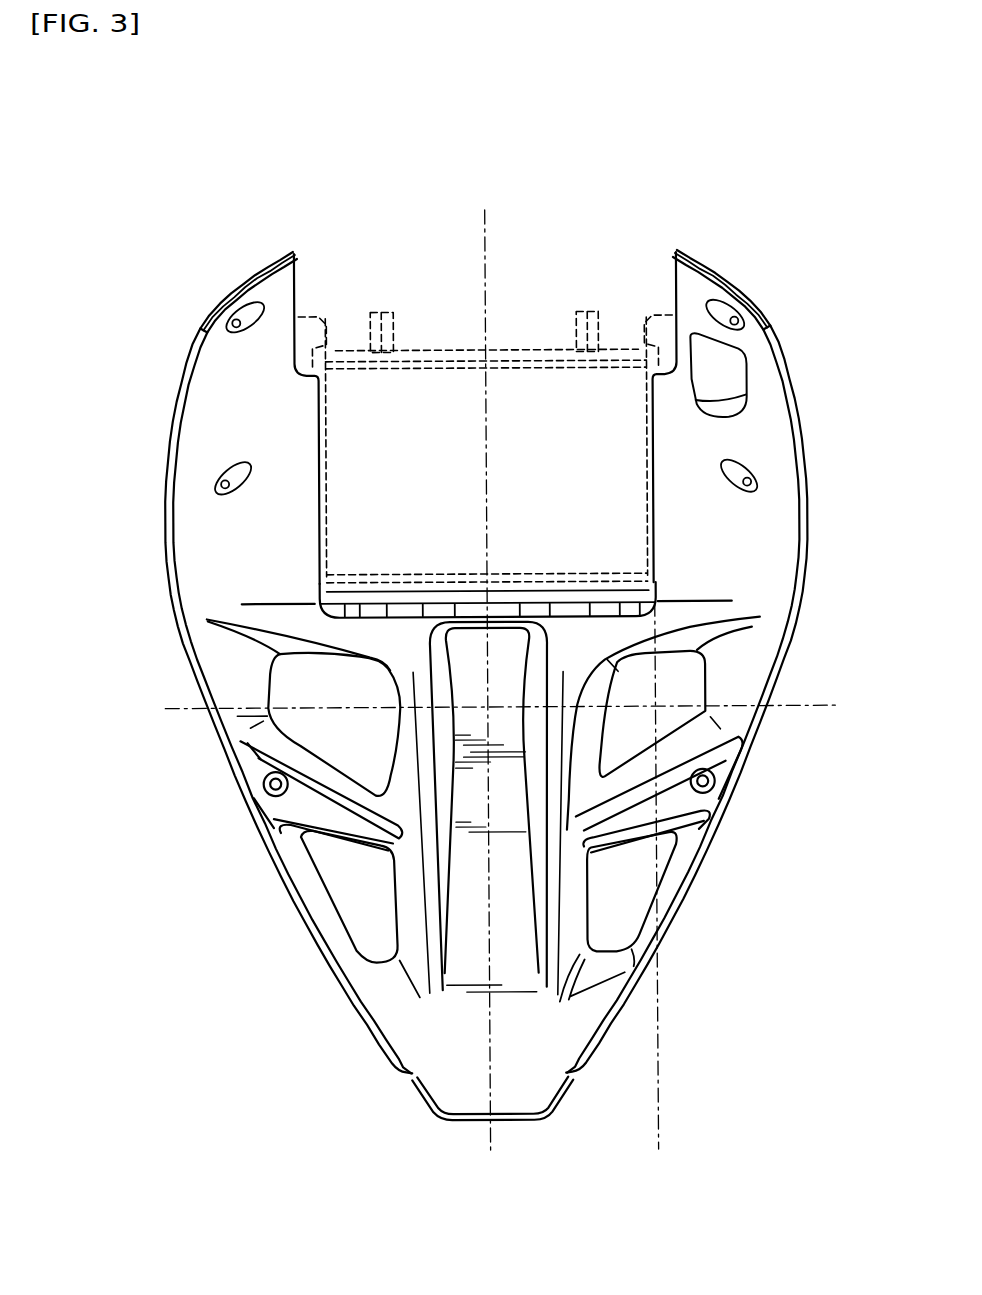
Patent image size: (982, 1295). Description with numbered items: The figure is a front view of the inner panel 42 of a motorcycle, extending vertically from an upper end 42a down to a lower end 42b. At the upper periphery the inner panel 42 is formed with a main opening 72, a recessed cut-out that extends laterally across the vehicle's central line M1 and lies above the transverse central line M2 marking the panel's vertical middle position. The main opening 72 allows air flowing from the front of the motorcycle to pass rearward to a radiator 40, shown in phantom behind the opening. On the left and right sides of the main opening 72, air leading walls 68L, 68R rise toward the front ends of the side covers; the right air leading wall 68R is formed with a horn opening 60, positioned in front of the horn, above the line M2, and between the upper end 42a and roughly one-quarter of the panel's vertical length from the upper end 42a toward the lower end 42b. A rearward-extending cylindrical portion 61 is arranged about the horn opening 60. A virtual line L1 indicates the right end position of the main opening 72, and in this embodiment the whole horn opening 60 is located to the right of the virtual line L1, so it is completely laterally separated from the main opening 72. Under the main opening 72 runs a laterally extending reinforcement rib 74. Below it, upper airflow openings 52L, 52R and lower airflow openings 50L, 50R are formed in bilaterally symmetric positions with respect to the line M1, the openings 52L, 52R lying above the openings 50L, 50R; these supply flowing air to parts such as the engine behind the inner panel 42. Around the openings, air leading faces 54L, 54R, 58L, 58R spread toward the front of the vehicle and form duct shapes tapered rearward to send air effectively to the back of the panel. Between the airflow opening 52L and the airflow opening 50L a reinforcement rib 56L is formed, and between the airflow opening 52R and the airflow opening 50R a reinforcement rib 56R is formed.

The radiator 40 is at (513, 366).
The inner panel 42 is at (358, 1025).
The upper end 42a is at (679, 255).
The lower end 42b is at (470, 1124).
The airflow opening 50L is at (375, 901).
The airflow opening 50R is at (640, 901).
The airflow opening 52L is at (374, 743).
The airflow opening 52R is at (651, 743).
The air leading face 54L is at (297, 860).
The air leading face 54R is at (683, 858).
The reinforcement rib 56L is at (250, 760).
The reinforcement rib 56R is at (720, 760).
The air leading face 58L is at (225, 643).
The air leading face 58R is at (752, 639).
The horn opening 60 is at (745, 367).
The cylindrical portion 61 is at (735, 413).
The air leading wall 68L is at (207, 410).
The air leading wall 68R is at (772, 383).
The main opening 72 is at (345, 541).
The reinforcement rib 74 is at (568, 606).
The central line M1 is at (485, 247).
The central line M2 is at (790, 701).
The virtual line L1 is at (660, 1058).